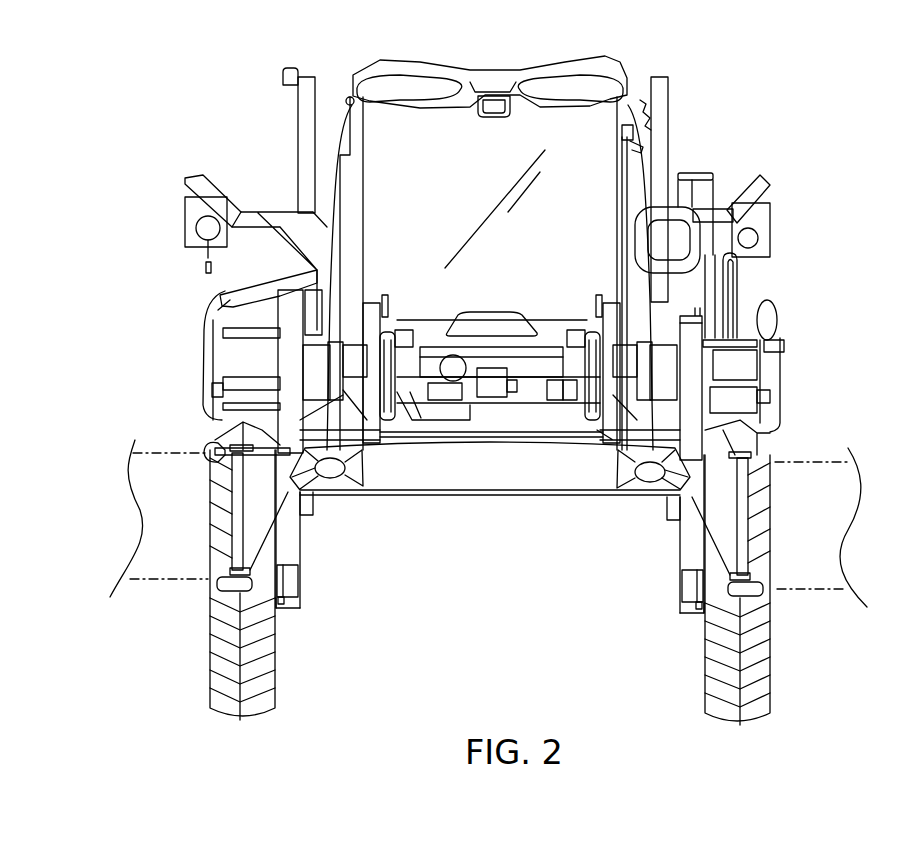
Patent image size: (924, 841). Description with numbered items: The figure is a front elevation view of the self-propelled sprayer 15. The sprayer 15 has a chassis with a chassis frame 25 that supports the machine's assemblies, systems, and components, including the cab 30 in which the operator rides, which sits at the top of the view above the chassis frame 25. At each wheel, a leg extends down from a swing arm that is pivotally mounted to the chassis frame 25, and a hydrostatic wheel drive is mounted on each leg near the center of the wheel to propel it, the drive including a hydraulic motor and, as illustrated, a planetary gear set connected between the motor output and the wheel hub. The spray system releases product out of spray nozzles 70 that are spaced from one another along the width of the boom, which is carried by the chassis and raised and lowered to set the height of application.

The sprayer 15 is at (520, 245).
The chassis frame 25 is at (578, 496).
The cab 30 is at (604, 59).
The spray nozzle 70 is at (815, 436).